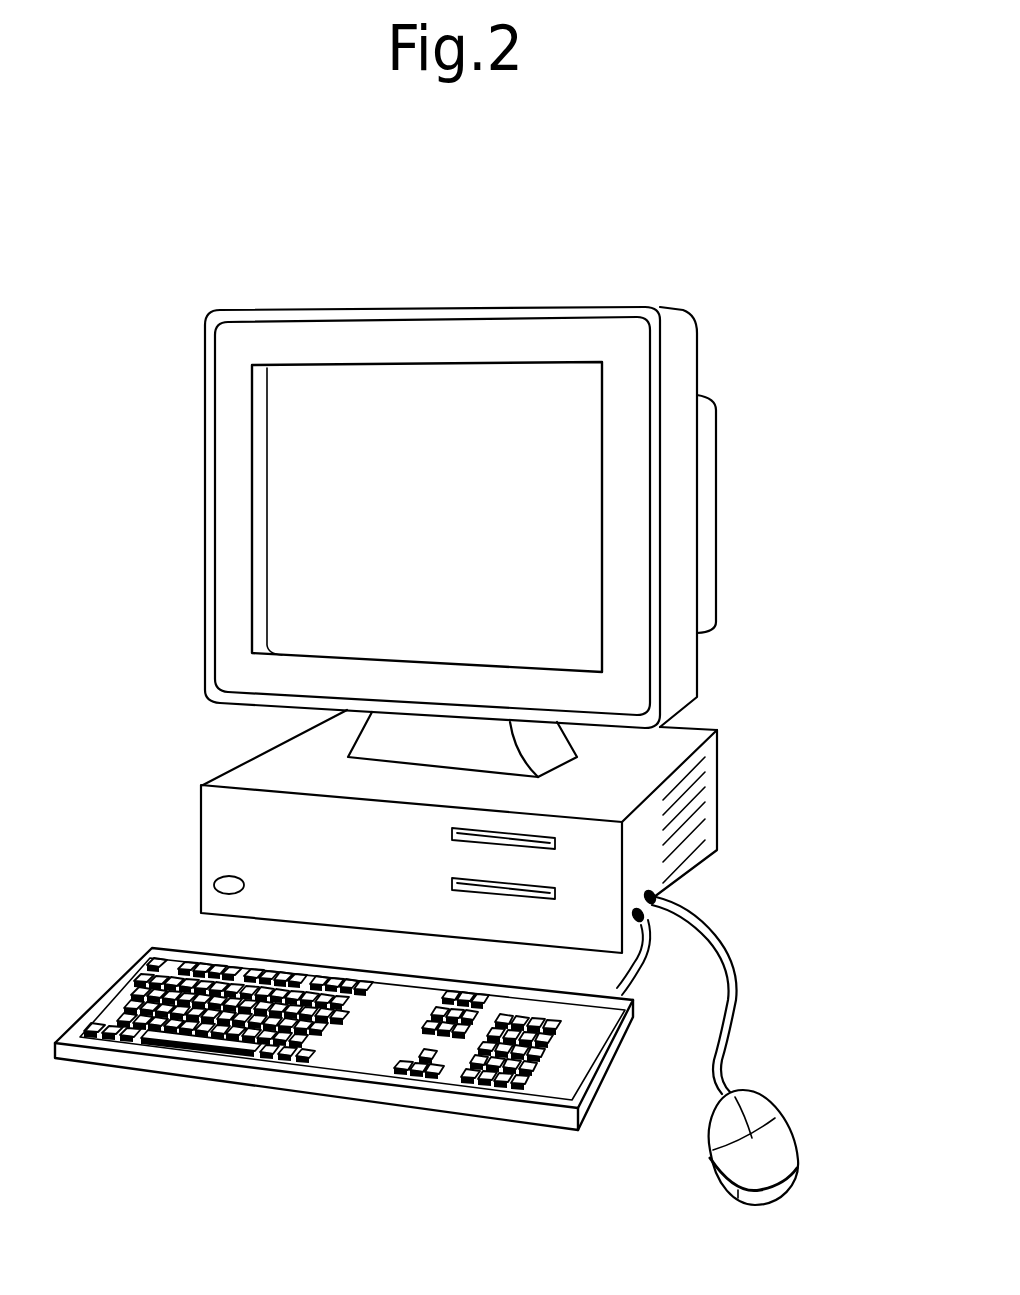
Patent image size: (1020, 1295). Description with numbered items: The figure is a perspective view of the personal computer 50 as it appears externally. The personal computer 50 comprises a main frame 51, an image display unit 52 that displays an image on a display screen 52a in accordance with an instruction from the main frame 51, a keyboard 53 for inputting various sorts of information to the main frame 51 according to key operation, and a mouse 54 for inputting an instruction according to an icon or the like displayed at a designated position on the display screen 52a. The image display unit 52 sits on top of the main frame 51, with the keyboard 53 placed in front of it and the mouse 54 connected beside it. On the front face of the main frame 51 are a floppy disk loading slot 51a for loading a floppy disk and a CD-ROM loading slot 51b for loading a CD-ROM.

The personal computer 50 is at (624, 291).
The main frame 51 is at (690, 818).
The floppy disk loading slot 51a is at (452, 832).
The CD-ROM loading slot 51b is at (452, 882).
The image display unit 52 is at (680, 442).
The display screen 52a is at (562, 562).
The keyboard 53 is at (243, 1053).
The mouse 54 is at (783, 1148).